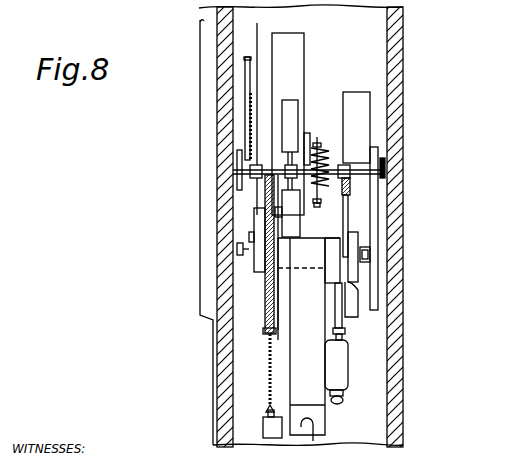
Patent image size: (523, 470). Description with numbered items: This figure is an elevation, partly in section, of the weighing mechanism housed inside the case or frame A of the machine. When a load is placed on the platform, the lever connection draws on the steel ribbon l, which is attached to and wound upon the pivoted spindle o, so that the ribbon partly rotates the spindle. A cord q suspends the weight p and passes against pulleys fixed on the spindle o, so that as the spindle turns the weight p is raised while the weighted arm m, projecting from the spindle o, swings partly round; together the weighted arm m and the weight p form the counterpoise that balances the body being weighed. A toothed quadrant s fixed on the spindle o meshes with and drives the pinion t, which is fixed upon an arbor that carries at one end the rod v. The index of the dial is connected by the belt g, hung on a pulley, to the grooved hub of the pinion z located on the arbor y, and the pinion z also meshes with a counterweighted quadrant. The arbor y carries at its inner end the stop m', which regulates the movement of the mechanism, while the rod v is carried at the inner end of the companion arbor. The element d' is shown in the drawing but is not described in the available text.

The case or frame A is at (233, 147).
The belt g is at (257, 32).
The slide bar d' is at (277, 135).
The pinion z is at (248, 100).
The arbor y is at (275, 163).
The rod v is at (321, 150).
The stop m' is at (319, 215).
The pinion t is at (347, 160).
The toothed quadrant s is at (348, 218).
The pivoted spindle o is at (332, 260).
The steel ribbon l is at (309, 339).
The cord q is at (277, 370).
The weight p is at (268, 430).
The weighted arm m is at (346, 343).